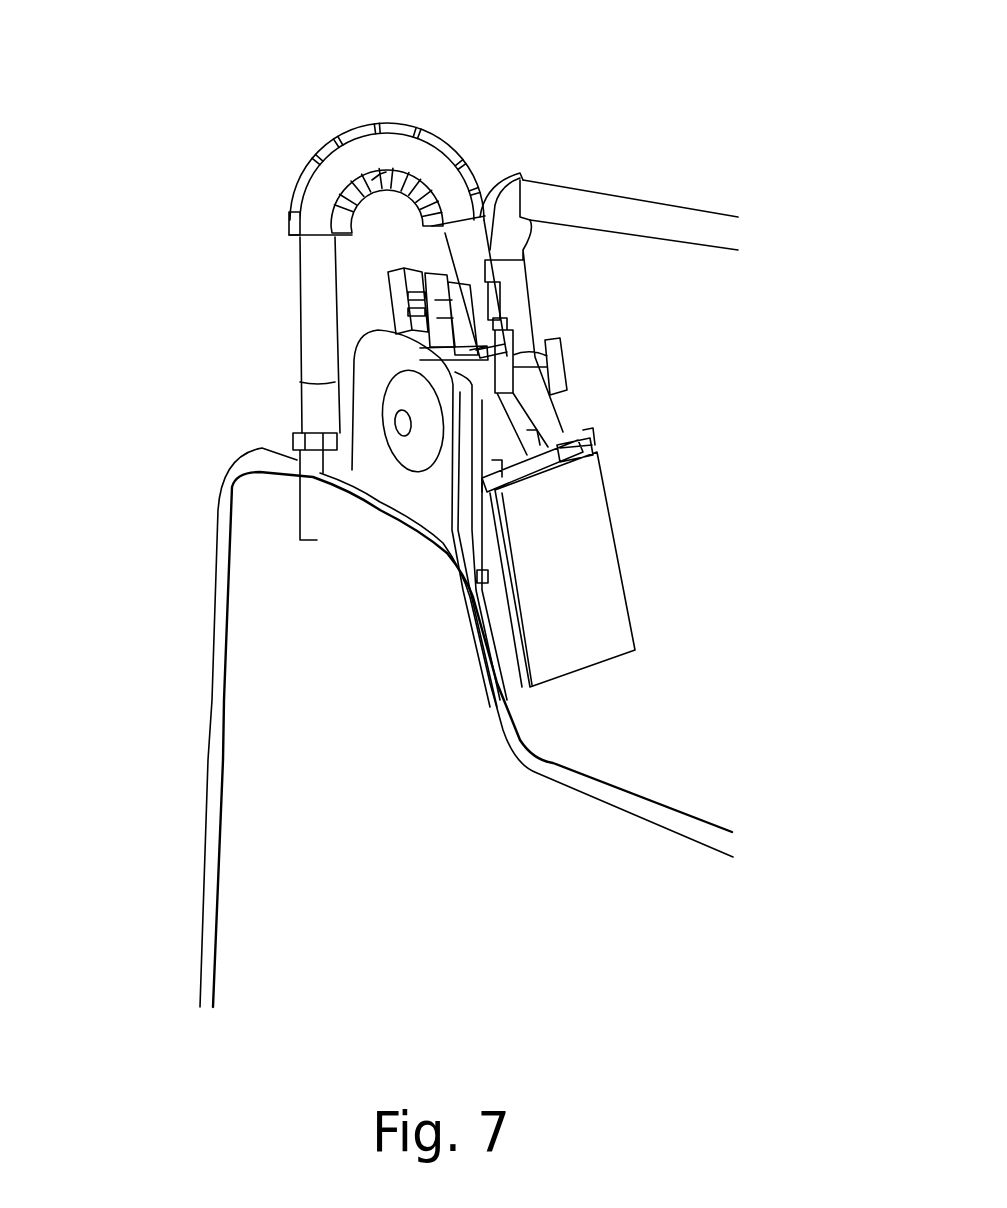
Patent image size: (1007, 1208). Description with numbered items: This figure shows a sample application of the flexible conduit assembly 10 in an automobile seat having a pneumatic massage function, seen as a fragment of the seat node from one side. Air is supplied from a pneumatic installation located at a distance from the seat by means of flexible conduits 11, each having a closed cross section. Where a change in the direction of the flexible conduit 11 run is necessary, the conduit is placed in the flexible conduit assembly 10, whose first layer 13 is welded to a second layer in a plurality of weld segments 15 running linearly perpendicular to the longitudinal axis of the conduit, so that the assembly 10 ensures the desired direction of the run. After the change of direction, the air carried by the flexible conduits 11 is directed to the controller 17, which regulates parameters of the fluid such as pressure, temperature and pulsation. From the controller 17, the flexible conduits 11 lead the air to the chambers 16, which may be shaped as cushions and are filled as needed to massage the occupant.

The flexible conduit assembly 10 is at (453, 132).
The flexible conduit 11 is at (320, 322).
The first layer 13 is at (345, 185).
The weld segments 15 is at (385, 190).
The chambers 16 is at (308, 753).
The controller 17 is at (578, 589).